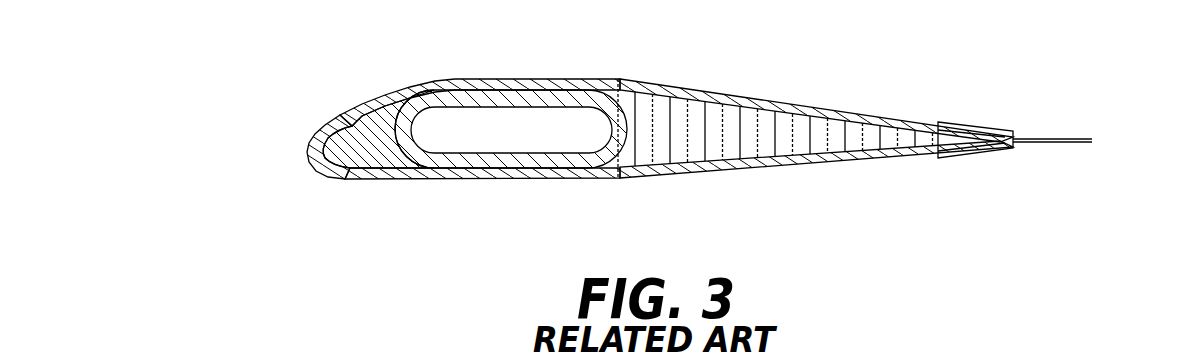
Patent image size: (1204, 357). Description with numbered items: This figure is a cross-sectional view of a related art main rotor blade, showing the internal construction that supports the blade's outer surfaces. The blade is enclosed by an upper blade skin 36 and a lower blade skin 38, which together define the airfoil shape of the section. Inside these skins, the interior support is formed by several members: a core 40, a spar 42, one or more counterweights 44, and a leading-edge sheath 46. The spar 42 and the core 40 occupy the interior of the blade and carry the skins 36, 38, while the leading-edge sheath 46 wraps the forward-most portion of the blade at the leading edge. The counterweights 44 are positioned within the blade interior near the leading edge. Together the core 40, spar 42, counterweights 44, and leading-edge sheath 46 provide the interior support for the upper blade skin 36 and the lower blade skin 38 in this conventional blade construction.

The upper blade skin 36 is at (678, 86).
The lower blade skin 38 is at (656, 179).
The core 40 is at (806, 120).
The spar 42 is at (618, 112).
The counterweight 44 is at (356, 134).
The leading-edge sheath 46 is at (312, 170).